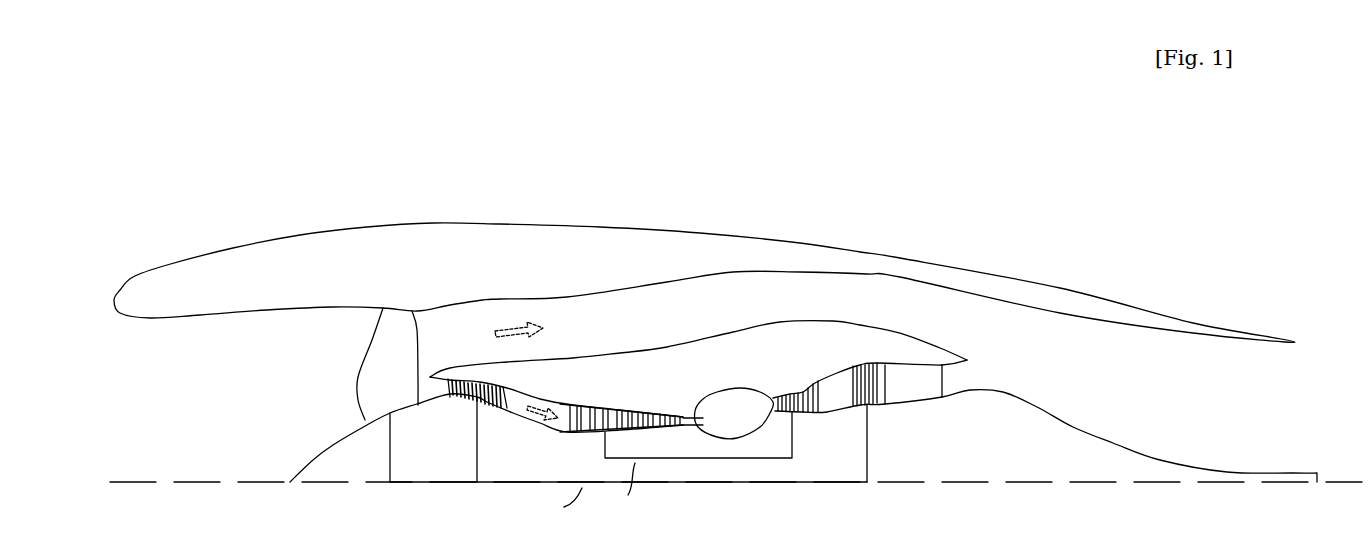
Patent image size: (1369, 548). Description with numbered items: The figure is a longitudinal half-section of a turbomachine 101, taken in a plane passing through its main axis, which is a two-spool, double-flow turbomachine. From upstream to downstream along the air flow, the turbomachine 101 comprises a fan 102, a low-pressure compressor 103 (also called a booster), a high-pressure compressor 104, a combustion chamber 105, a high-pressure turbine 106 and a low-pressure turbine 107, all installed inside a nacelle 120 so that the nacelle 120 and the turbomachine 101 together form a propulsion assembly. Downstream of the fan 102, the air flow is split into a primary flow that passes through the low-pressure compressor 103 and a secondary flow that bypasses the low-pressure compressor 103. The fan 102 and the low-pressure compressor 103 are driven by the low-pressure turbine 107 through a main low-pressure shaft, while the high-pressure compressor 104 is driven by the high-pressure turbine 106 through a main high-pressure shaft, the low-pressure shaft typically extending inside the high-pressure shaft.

The turbomachine 101 is at (969, 140).
The nacelle 120 is at (430, 263).
The fan 102 is at (356, 362).
The low-pressure compressor 103 is at (465, 398).
The high-pressure compressor 104 is at (653, 432).
The combustion chamber 105 is at (730, 442).
The high-pressure turbine 106 is at (810, 417).
The low-pressure turbine 107 is at (880, 410).